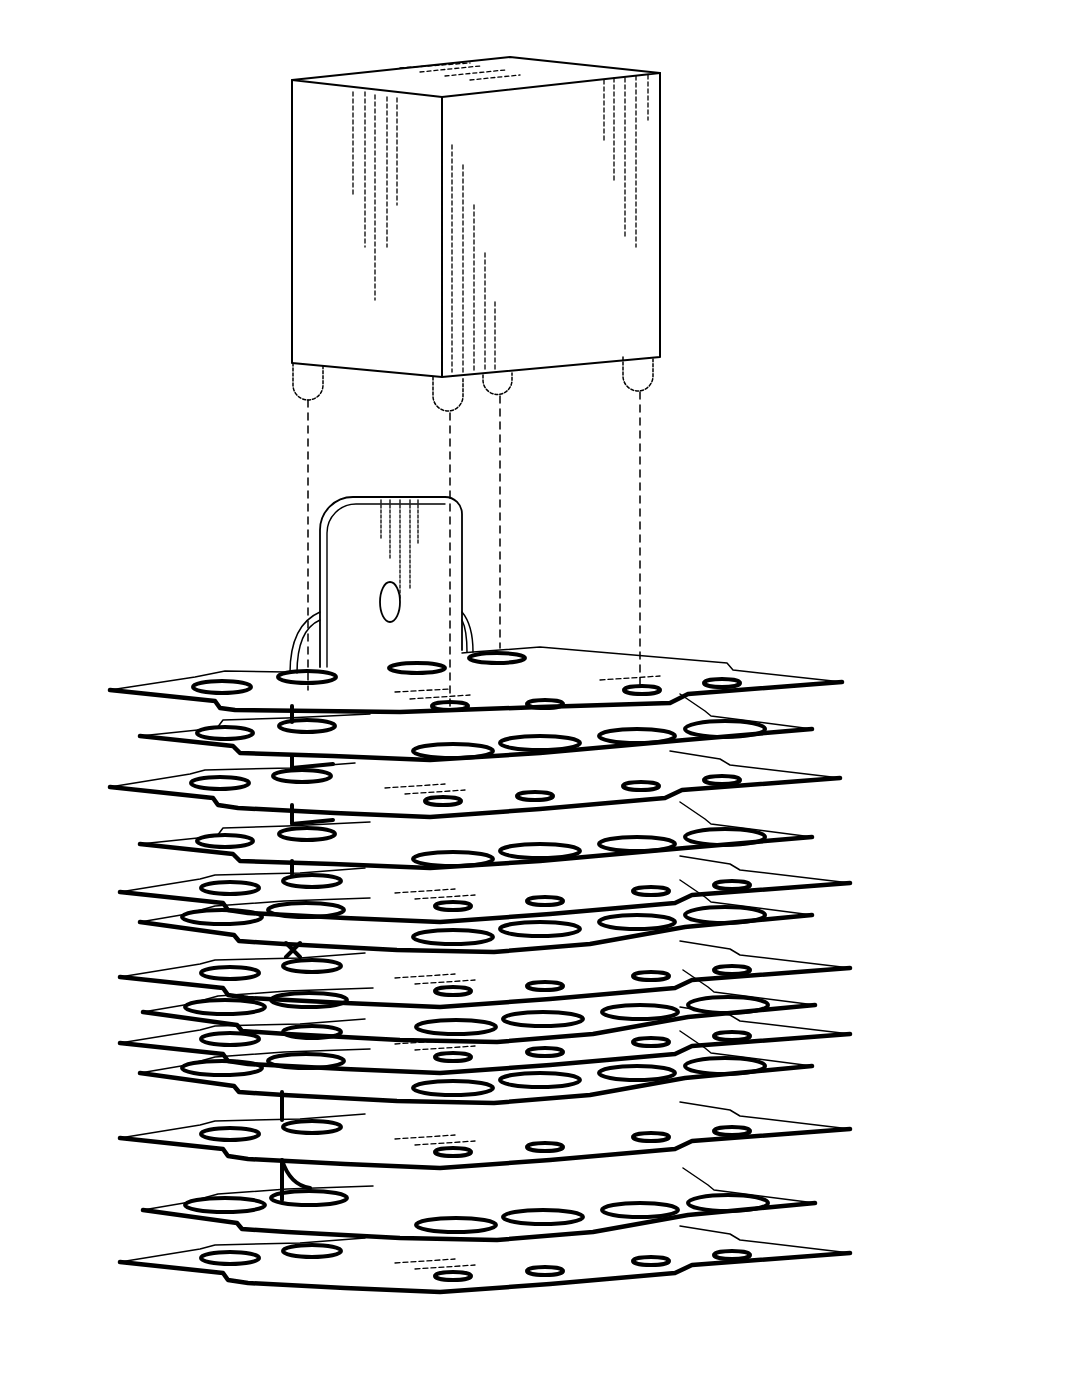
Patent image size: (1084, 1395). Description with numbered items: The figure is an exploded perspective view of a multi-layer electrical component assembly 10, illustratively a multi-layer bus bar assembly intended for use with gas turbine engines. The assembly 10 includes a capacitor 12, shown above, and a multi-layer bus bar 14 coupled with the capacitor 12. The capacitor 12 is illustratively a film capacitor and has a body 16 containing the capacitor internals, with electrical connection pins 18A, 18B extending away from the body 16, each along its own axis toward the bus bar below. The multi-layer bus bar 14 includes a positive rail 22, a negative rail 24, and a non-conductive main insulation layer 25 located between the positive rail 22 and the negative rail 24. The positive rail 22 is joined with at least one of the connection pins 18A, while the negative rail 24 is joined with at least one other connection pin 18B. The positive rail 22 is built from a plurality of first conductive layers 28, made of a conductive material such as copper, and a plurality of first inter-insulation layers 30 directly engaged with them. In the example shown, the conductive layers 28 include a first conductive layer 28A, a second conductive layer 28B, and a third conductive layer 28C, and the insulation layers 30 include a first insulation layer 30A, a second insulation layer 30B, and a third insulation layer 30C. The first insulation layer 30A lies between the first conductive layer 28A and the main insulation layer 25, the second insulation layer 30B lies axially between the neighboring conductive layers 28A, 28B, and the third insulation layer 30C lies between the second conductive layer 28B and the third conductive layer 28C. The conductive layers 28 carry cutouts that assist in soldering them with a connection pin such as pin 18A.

The multi-layer electrical component assembly 10 is at (247, 88).
The capacitor 12 is at (672, 186).
The multi-layer bus bar 14 is at (250, 658).
The body 16 is at (305, 200).
The electrical connection pin 18A is at (437, 392).
The electrical connection pin 18B is at (652, 363).
The positive rail 22 is at (753, 655).
The negative rail 24 is at (115, 1134).
The main insulation layer 25 is at (185, 968).
The first conductive layers 28 is at (950, 750).
The first conductive layer 28A is at (855, 779).
The second conductive layer 28B is at (822, 727).
The third conductive layer 28C is at (811, 665).
The first inter-insulation layers 30 is at (75, 830).
The first insulation layer 30A is at (130, 920).
The second insulation layer 30B is at (130, 842).
The third insulation layer 30C is at (130, 734).